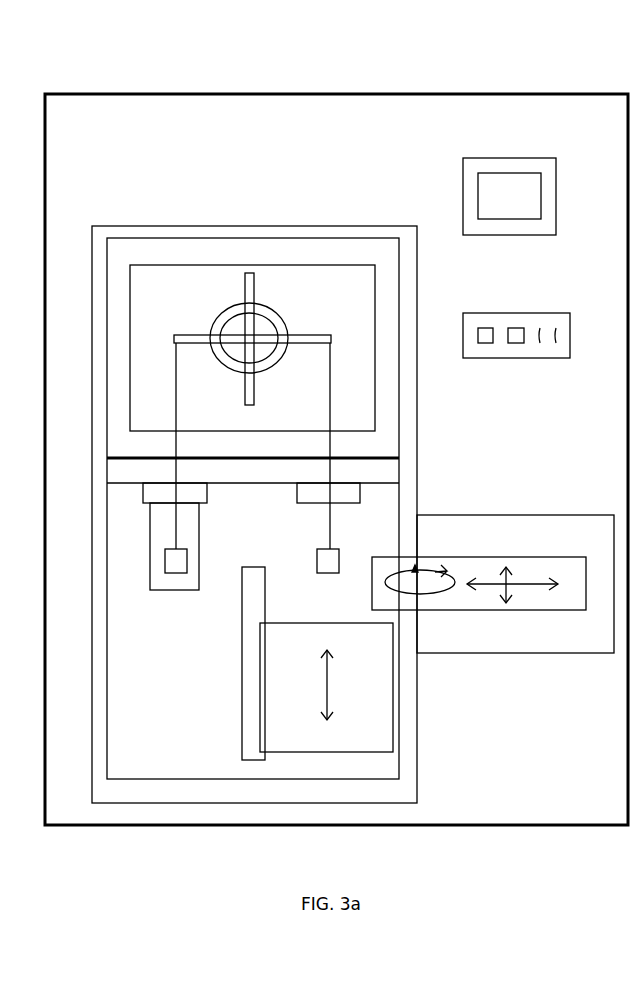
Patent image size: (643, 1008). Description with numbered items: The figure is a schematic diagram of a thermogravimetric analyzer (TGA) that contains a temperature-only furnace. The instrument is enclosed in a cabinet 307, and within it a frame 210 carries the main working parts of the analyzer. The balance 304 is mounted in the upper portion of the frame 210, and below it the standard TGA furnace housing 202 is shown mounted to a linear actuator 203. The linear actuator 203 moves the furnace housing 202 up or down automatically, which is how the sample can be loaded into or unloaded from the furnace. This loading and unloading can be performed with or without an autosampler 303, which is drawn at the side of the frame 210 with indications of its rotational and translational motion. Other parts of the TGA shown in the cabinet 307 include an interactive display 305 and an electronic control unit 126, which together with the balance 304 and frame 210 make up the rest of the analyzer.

The cabinet 307 is at (262, 93).
The frame 210 is at (419, 408).
The balance 304 is at (230, 295).
The interactive display 305 is at (462, 217).
The electronic control unit 126 is at (513, 312).
The autosampler 303 is at (478, 560).
The linear actuator 203 is at (243, 640).
The standard TGA furnace housing 202 is at (389, 717).